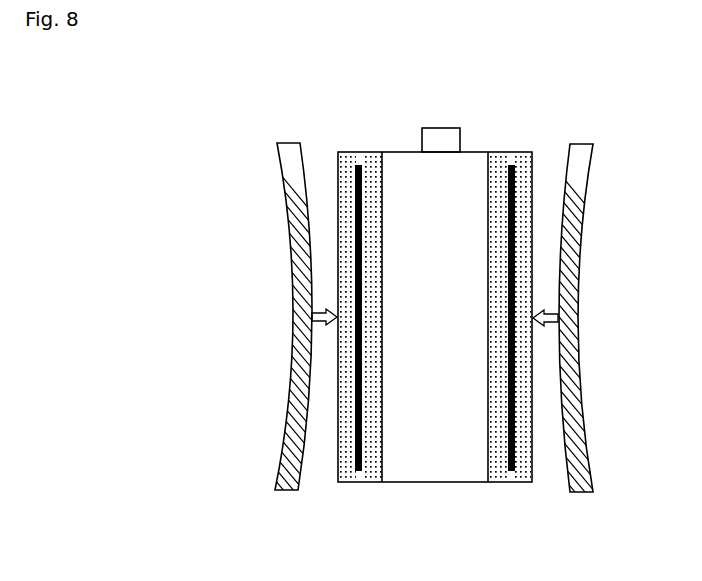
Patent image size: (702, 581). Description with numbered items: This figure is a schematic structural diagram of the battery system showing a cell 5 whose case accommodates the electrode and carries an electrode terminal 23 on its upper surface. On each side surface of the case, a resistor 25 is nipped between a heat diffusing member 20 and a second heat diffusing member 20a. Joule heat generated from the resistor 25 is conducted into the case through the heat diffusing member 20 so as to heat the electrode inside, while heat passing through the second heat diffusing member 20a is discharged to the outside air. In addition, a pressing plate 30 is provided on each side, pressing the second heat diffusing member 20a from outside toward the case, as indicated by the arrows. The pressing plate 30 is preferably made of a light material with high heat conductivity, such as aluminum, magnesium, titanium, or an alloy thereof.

The cell 5 is at (403, 160).
The heat diffusing member 20 is at (372, 152).
The second heat diffusing member 20a is at (345, 152).
The electrode terminal 23 is at (438, 140).
The resistor 25 is at (357, 466).
The pressing plate 30 is at (287, 148).